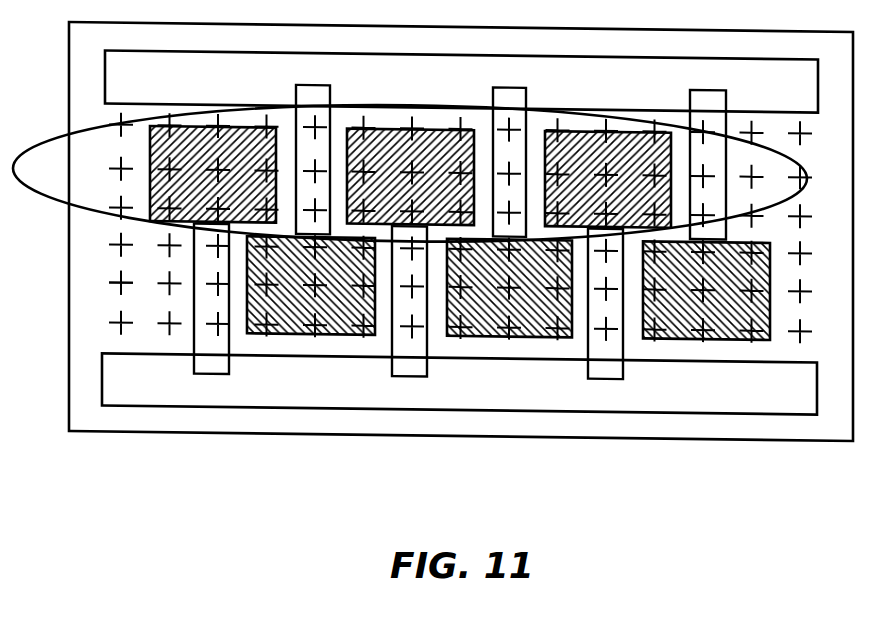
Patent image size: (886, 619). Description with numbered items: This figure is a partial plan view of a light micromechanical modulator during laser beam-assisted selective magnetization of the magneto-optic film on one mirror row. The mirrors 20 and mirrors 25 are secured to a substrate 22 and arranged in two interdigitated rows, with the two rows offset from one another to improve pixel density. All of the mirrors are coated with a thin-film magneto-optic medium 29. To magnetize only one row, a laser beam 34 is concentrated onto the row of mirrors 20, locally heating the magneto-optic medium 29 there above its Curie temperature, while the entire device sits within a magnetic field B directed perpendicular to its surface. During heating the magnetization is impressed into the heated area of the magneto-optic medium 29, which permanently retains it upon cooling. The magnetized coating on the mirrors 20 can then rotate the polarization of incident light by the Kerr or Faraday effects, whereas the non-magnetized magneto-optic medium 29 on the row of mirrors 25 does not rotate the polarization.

The substrate 22 is at (77, 98).
The mirror 20 is at (193, 135).
The mirror 25 is at (331, 332).
The magneto-optic medium 29 is at (243, 130).
The laser beam 34 is at (47, 200).
The magnetic field B is at (112, 288).